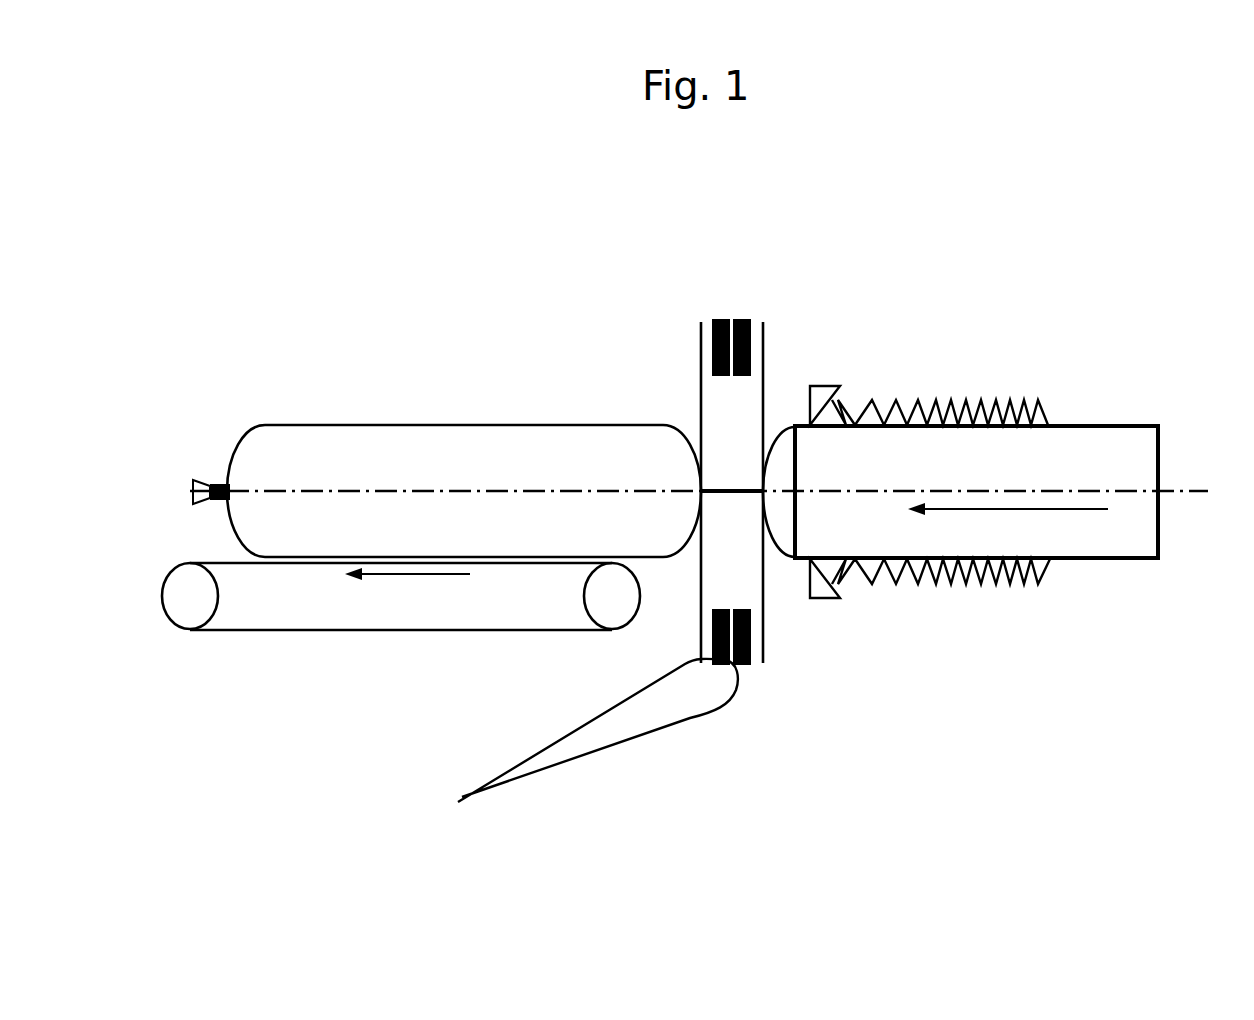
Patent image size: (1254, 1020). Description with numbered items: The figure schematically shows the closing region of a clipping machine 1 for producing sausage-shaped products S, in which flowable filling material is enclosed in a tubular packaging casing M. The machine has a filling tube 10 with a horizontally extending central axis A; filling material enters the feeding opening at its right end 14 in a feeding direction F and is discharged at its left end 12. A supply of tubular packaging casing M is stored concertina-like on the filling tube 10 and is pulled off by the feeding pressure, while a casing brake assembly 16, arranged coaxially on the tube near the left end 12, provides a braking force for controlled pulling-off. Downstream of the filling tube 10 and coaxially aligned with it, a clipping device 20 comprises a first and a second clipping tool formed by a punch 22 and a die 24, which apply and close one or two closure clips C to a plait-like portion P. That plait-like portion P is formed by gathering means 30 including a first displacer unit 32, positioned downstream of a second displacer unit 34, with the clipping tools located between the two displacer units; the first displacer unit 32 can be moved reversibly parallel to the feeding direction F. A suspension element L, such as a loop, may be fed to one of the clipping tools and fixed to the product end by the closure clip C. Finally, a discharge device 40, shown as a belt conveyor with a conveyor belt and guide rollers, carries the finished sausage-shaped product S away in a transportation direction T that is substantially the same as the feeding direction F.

The clipping machine 1 is at (906, 260).
The filling tube 10 is at (1088, 425).
The left end 12 is at (800, 518).
The right end 14 is at (1160, 452).
The casing brake assembly 16 is at (840, 386).
The clipping device 20 is at (680, 487).
The punch 22 is at (749, 346).
The die 24 is at (712, 645).
The gathering means 30 is at (799, 553).
The first displacer unit 32 is at (763, 577).
The second displacer unit 34 is at (705, 555).
The discharge device 40 is at (431, 655).
The central axis A is at (1203, 495).
The closure clip C is at (207, 484).
The sausage-shaped product S is at (447, 424).
The plait-like portion P is at (730, 490).
The tubular packaging casing M is at (1002, 405).
The feeding direction F is at (1008, 525).
The transportation direction T is at (407, 590).
The suspension element L is at (670, 723).